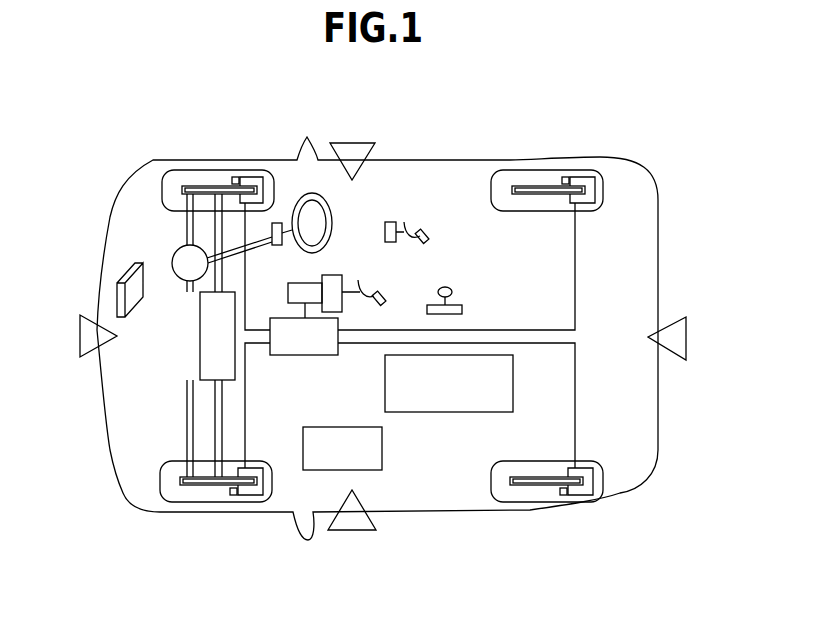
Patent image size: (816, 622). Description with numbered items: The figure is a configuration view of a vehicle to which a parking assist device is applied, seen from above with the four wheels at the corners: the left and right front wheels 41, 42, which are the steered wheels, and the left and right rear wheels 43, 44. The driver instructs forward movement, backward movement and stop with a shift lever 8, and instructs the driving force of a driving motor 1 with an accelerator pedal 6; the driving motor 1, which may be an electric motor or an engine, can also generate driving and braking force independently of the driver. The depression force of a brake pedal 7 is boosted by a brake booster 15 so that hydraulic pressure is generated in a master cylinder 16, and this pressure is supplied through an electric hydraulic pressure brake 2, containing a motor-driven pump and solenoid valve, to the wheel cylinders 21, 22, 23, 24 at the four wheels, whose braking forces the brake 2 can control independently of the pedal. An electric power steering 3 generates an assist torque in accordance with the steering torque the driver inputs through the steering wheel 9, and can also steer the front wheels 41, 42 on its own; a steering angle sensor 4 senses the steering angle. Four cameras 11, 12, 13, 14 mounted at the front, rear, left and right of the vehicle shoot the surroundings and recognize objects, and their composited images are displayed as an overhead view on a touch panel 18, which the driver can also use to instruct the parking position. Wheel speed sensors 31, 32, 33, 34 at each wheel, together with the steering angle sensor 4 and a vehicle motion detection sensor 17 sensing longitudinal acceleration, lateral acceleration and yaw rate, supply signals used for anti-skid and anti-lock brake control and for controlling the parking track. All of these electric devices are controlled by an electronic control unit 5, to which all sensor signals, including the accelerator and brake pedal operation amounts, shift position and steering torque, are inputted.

The driving motor 1 is at (200, 357).
The electric hydraulic pressure brake 2 is at (305, 355).
The electric power steering 3 is at (172, 258).
The steering angle sensor 4 is at (277, 223).
The electronic control unit 5 is at (382, 449).
The accelerator pedal 6 is at (428, 225).
The brake pedal 7 is at (376, 292).
The shift lever 8 is at (452, 290).
The steering wheel 9 is at (312, 193).
The camera 11 is at (80, 336).
The camera 12 is at (352, 531).
The camera 13 is at (352, 143).
The camera 14 is at (688, 337).
The brake booster 15 is at (332, 275).
The master cylinder 16 is at (305, 283).
The vehicle motion detection sensor 17 is at (513, 383).
The touch panel 18 is at (117, 300).
The wheel cylinder 21 is at (257, 496).
The wheel cylinder 22 is at (258, 177).
The wheel cylinder 23 is at (583, 496).
The wheel cylinder 24 is at (590, 177).
The wheel speed sensor 31 is at (233, 496).
The wheel speed sensor 32 is at (235, 177).
The wheel speed sensor 33 is at (563, 496).
The wheel speed sensor 34 is at (565, 177).
The left front wheel 41 is at (160, 487).
The right front wheel 42 is at (163, 183).
The left rear wheel 43 is at (491, 487).
The right rear wheel 44 is at (492, 184).